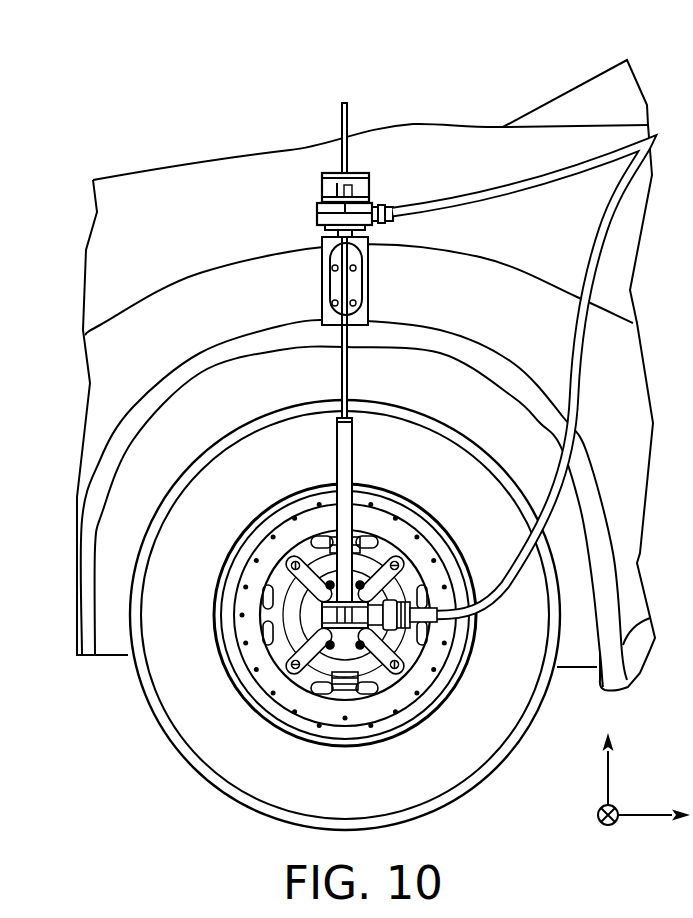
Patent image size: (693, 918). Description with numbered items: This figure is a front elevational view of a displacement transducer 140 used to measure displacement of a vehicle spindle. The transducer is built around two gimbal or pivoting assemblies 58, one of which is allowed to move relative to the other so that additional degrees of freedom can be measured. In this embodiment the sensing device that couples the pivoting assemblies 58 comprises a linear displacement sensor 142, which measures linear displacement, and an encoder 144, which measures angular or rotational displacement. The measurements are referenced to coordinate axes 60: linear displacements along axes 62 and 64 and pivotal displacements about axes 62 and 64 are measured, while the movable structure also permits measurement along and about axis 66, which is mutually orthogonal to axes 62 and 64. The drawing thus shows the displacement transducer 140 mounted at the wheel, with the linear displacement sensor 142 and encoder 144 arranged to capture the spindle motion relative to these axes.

The pivoting assembly 58 is at (412, 187).
The coordinate axes 60 is at (614, 798).
The axis 62 is at (643, 818).
The axis 64 is at (598, 819).
The axis 66 is at (611, 778).
The displacement transducer 140 is at (372, 115).
The linear displacement sensor 142 is at (368, 438).
The encoder 144 is at (289, 215).